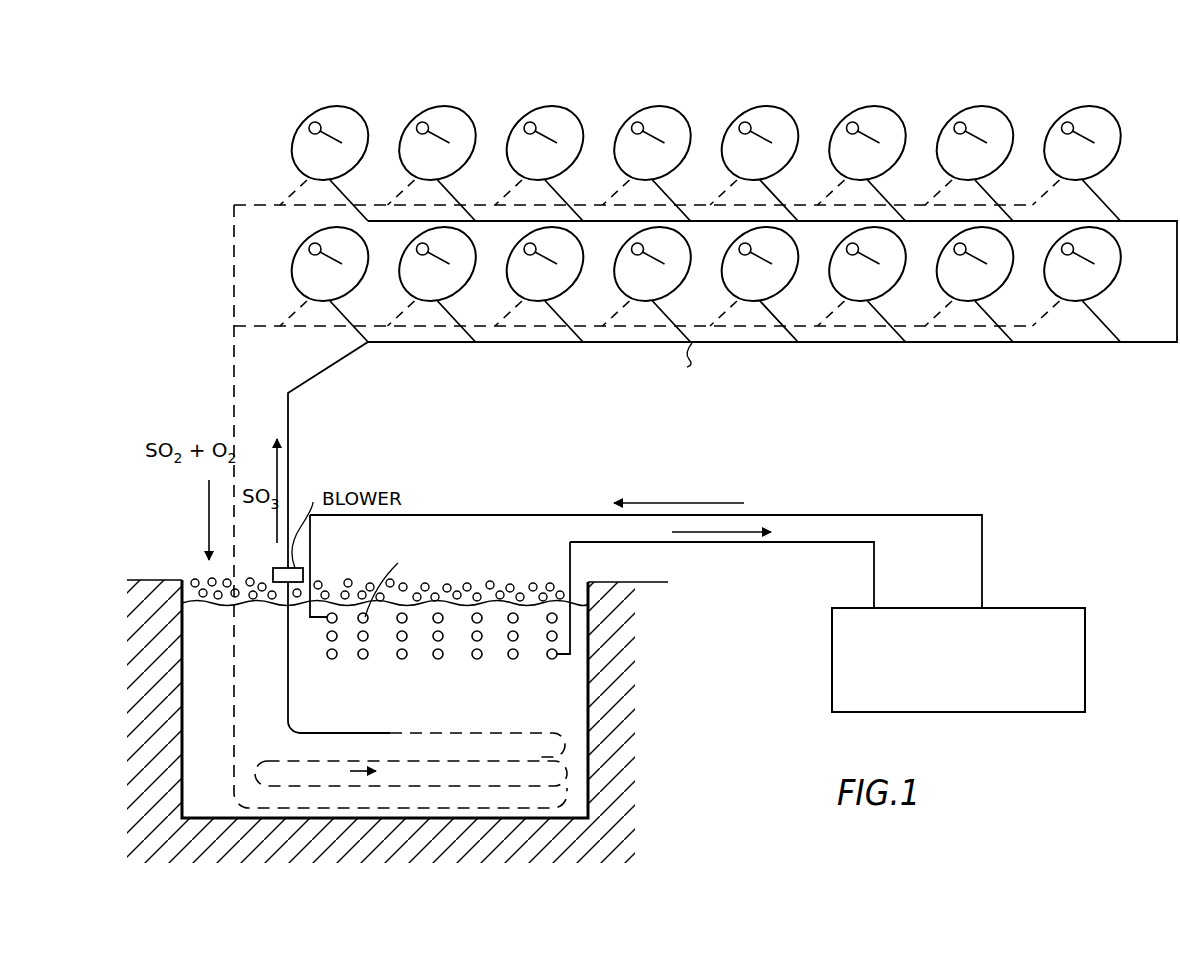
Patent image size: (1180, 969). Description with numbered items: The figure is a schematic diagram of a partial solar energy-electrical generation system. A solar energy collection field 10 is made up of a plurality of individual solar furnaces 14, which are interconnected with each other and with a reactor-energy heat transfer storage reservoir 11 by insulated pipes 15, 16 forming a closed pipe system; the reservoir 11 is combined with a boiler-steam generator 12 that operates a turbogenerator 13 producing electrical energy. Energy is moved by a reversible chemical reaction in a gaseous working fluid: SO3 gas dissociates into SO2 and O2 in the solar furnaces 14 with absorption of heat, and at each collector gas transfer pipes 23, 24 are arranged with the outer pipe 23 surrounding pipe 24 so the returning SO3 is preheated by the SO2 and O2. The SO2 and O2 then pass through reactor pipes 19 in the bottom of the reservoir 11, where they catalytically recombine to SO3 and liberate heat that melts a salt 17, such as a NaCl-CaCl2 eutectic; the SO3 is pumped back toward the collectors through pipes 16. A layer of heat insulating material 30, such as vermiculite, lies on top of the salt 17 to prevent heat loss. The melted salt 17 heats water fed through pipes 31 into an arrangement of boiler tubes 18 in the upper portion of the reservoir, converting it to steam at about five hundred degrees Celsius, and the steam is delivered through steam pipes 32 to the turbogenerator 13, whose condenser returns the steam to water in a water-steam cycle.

The solar energy collection field 10 is at (705, 441).
The reactor-energy heat transfer storage reservoir 11 is at (264, 687).
The boiler-steam generator 12 is at (448, 605).
The turbogenerator 13 is at (957, 697).
The solar furnaces 14 is at (640, 113).
The insulated pipes 15 is at (690, 205).
The insulated pipes 16 is at (829, 222).
The salt 17 is at (340, 600).
The boiler tubes 18 is at (551, 658).
The reactor pipes 19 is at (562, 788).
The gas transfer pipe 23 is at (893, 190).
The gas transfer pipe 24 is at (827, 187).
The layer of heat insulating material 30 is at (210, 580).
The pipes 31 is at (472, 515).
The steam pipes 32 is at (638, 543).